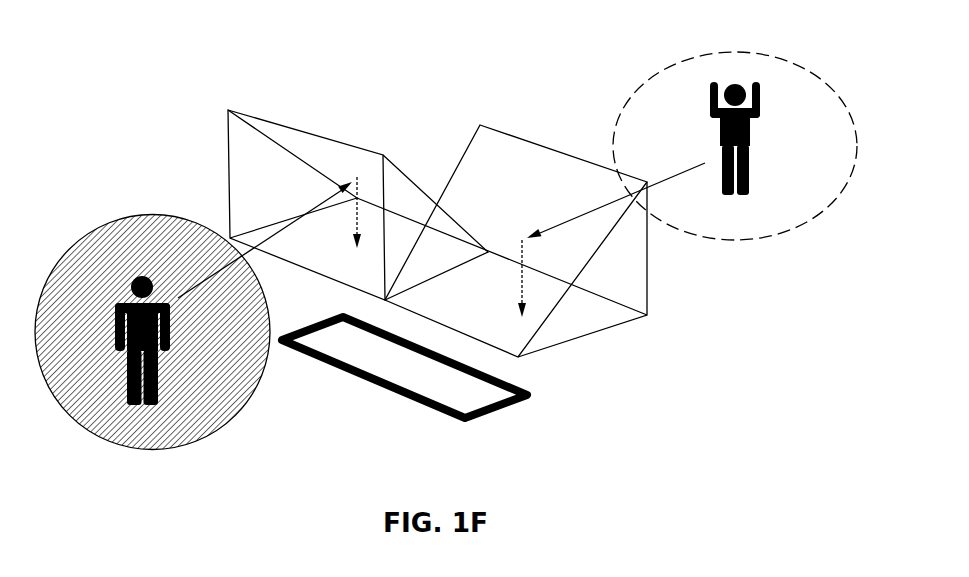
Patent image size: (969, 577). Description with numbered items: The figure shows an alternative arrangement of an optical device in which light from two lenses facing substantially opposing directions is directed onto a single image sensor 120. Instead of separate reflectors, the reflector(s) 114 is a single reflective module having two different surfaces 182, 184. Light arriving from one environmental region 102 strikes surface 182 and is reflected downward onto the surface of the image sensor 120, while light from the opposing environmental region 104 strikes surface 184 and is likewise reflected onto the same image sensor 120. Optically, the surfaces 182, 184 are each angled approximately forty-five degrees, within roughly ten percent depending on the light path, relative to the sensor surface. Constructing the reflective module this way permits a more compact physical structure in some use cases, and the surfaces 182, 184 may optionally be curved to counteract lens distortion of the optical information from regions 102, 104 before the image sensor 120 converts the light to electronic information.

The environmental region 102 is at (238, 460).
The environmental region 104 is at (735, 258).
The reflectors 114 is at (587, 337).
The image sensor 120 is at (537, 427).
The surface 182 is at (308, 147).
The surface 184 is at (530, 163).